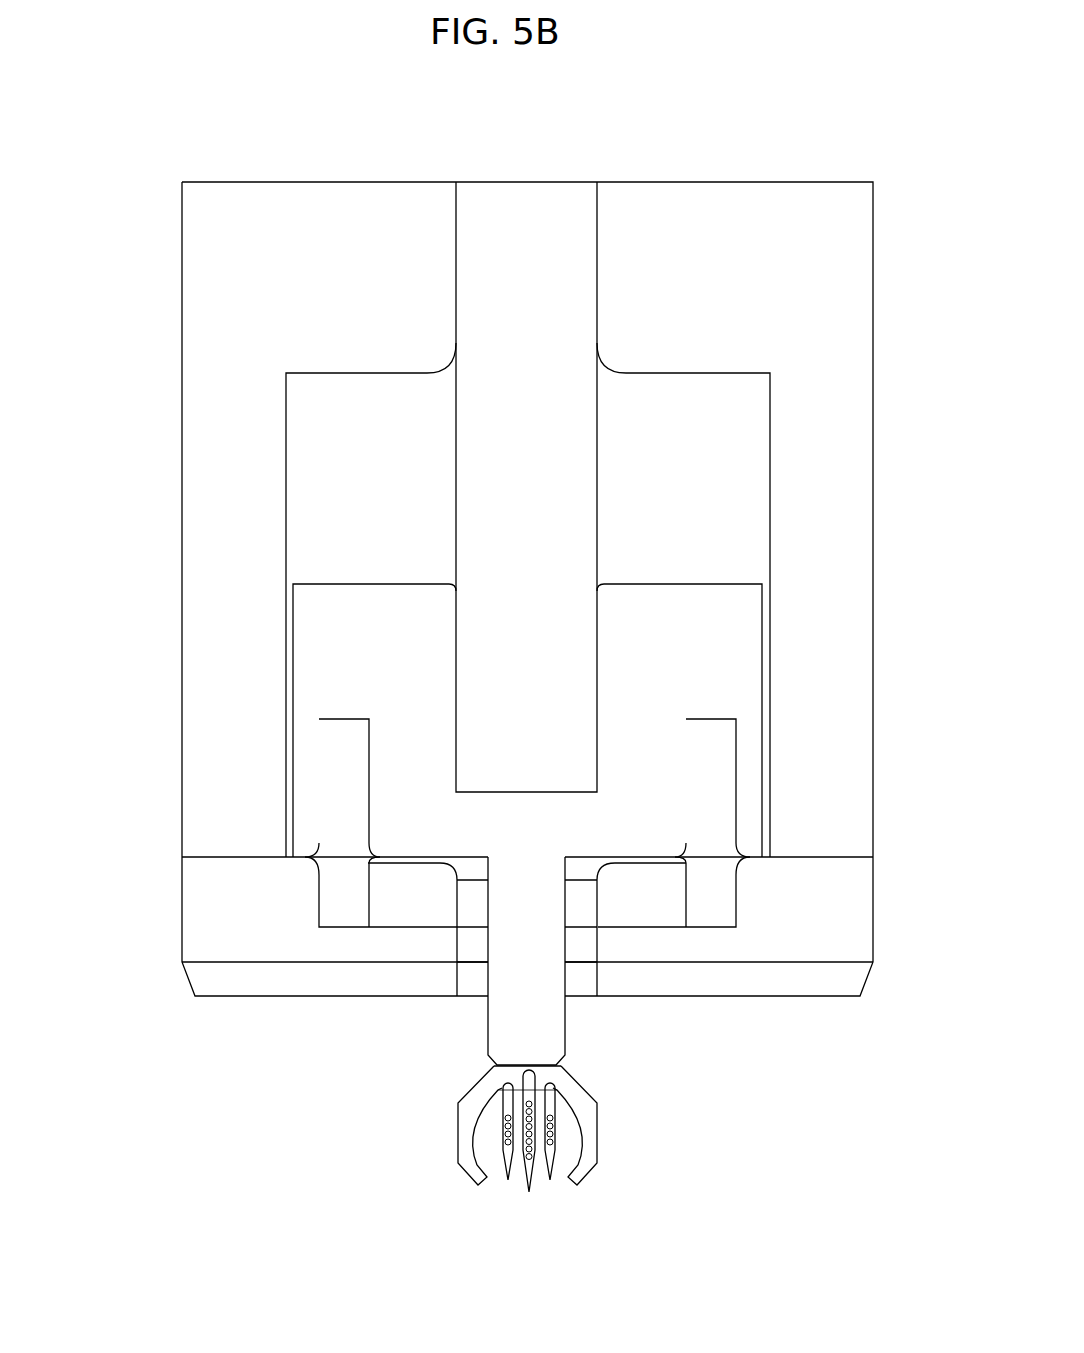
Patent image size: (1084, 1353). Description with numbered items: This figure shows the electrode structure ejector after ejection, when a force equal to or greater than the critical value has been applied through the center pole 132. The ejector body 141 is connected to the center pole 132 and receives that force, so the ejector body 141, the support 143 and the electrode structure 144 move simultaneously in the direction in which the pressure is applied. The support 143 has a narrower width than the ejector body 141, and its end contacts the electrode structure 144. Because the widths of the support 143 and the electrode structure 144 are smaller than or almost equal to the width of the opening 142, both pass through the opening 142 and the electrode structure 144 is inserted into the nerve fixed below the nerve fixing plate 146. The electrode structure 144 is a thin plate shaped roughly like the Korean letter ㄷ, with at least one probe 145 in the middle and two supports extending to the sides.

The center pole 132 is at (587, 305).
The ejector body 141 is at (747, 657).
The opening 142 is at (467, 992).
The support 143 is at (557, 1033).
The electrode structure 144 is at (597, 1133).
The probe 145 is at (530, 1190).
The nerve fixing plate 146 is at (190, 923).